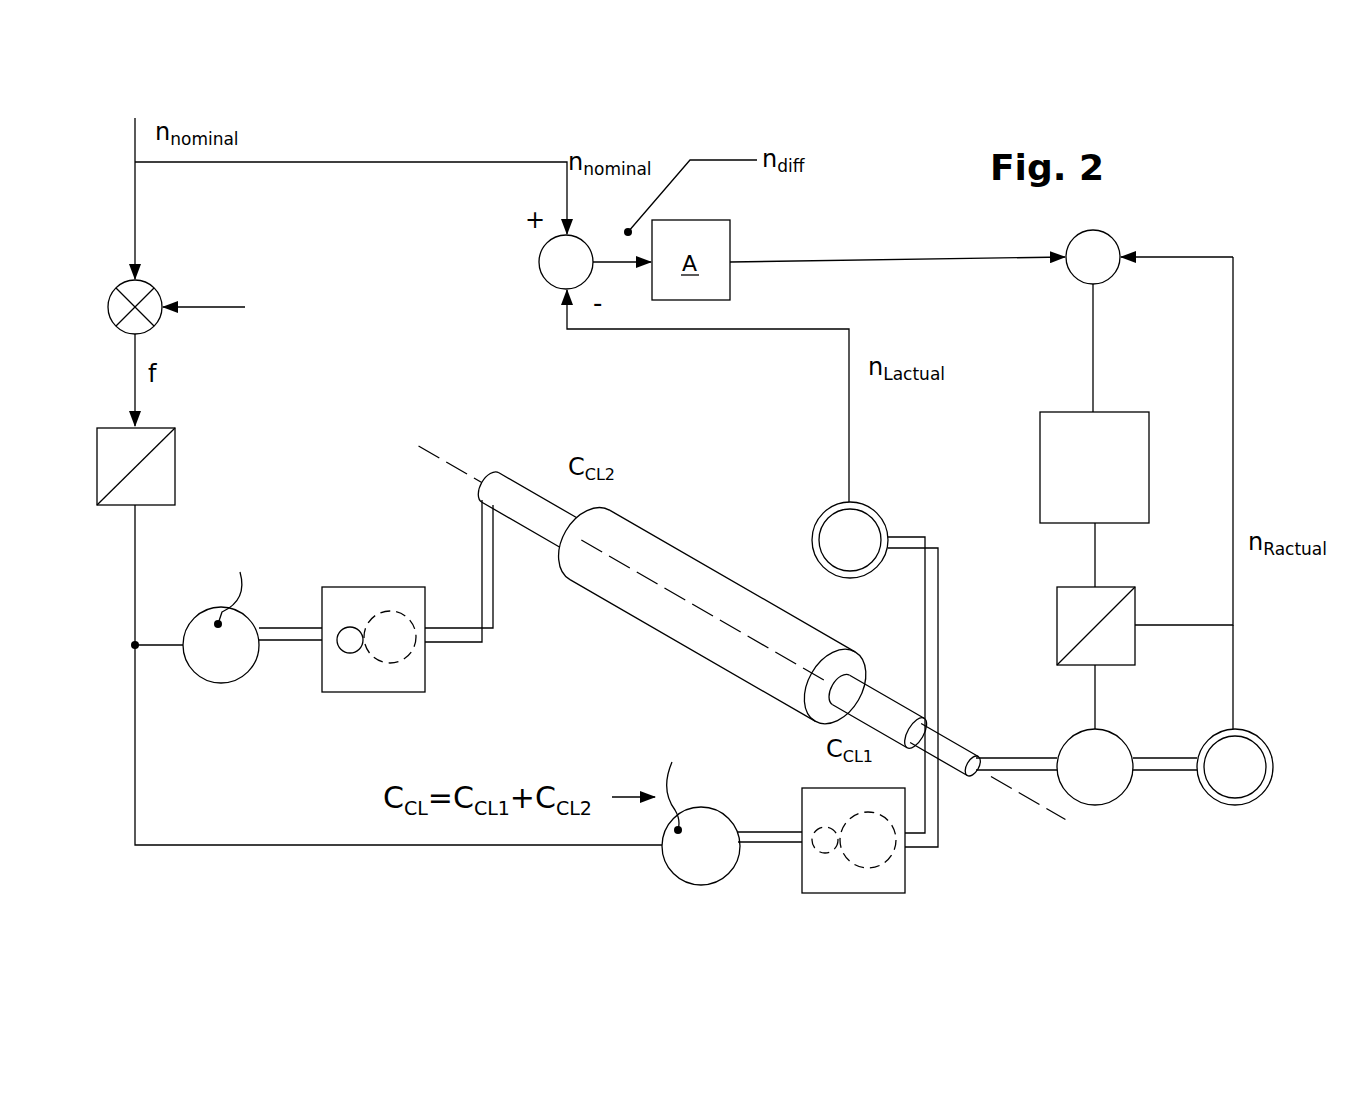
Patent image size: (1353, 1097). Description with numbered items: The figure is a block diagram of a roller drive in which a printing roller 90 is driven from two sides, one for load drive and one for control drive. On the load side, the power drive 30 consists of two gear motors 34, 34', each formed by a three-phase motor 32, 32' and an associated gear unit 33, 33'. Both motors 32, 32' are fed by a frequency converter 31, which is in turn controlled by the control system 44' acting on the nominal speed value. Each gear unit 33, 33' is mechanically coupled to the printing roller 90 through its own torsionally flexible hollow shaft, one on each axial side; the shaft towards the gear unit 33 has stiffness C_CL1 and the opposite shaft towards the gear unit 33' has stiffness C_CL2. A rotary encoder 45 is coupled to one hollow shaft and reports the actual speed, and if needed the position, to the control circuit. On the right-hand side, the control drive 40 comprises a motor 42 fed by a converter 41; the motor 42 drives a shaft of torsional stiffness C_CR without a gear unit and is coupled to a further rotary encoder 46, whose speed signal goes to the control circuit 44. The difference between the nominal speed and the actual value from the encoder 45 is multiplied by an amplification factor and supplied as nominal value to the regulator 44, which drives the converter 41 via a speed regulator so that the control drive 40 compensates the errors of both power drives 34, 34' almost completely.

The power drive 30 is at (582, 723).
The frequency converter 31 is at (192, 468).
The three-phase motor 32 is at (717, 809).
The three-phase motor 32' is at (246, 645).
The gear unit 33 is at (895, 829).
The gear unit 33' is at (373, 664).
The gear motor 34 is at (823, 840).
The gear motor 34' is at (334, 653).
The control drive 40 is at (1122, 721).
The converter 41 is at (1070, 599).
The motor 42 is at (1117, 787).
The control circuit 44 is at (1180, 478).
The control system 44' is at (230, 310).
The rotary encoder 45 is at (879, 653).
The rotary encoder 46 is at (1247, 783).
The printing roller 90 is at (748, 622).